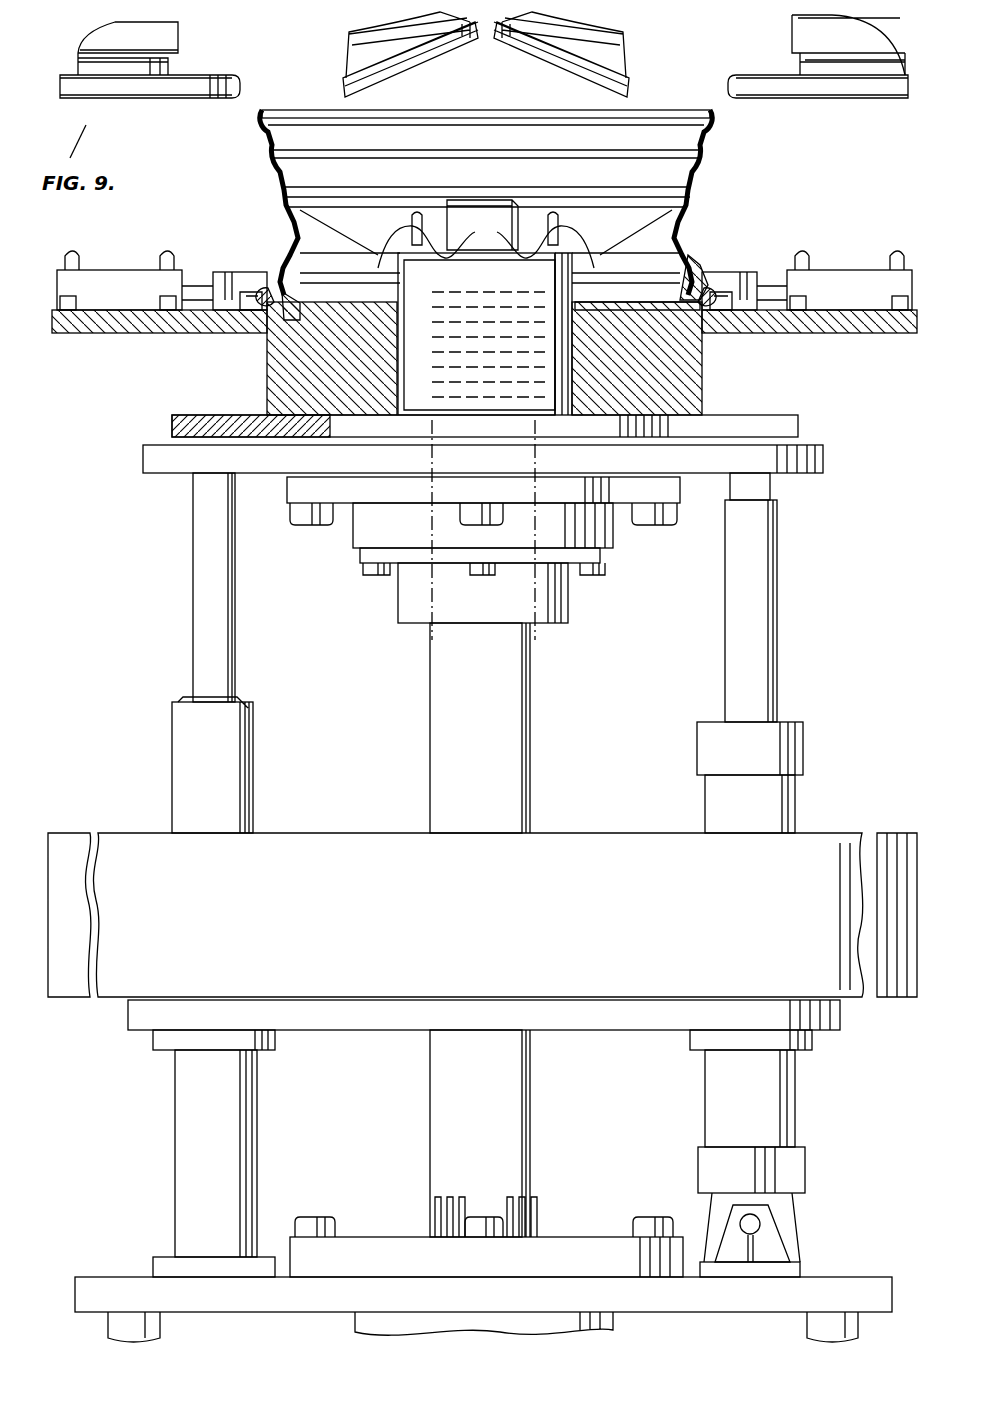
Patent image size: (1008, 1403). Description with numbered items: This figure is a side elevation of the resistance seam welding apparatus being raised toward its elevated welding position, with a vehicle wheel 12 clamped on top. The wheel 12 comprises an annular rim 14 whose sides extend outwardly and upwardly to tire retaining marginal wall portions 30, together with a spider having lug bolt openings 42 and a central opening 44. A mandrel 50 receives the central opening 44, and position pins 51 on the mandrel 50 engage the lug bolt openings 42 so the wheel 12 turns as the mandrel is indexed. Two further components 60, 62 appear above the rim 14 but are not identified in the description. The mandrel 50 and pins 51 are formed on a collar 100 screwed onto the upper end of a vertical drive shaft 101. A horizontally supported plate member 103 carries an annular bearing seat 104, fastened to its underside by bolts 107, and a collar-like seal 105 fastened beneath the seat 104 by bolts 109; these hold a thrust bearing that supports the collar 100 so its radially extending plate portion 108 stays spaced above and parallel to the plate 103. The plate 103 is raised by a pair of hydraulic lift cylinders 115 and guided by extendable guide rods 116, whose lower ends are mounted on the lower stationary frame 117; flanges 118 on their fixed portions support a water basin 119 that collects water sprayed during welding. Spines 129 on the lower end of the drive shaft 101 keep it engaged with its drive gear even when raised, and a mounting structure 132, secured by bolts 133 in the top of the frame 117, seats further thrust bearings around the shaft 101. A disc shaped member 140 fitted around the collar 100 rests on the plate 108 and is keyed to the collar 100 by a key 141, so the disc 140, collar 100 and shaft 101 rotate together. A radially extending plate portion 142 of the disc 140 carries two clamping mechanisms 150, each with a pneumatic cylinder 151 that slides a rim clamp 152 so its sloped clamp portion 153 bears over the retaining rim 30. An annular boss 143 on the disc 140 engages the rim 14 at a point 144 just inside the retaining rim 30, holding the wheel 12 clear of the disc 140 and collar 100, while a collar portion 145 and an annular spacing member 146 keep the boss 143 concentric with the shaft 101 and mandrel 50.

The vehicle wheel 12 is at (712, 155).
The annular rim 14 is at (700, 172).
The tire retaining marginal wall portion 30 is at (258, 115).
The lug bolt openings 42 is at (556, 240).
The central opening 44 is at (446, 232).
The mandrel means 50 is at (495, 200).
The position pins 51 is at (415, 225).
The rim section 60 is at (215, 75).
The rim section 62 is at (348, 85).
The collar member 100 is at (555, 381).
The drive shaft 101 is at (476, 720).
The plate member 103 is at (823, 466).
The annular member 104 is at (368, 530).
The collar-like seal means 105 is at (568, 600).
The bolts 107 is at (640, 520).
The radially extending plate portion 108 is at (798, 428).
The bolts 109 is at (368, 578).
The lift cylinders 115 is at (785, 802).
The guide rods 116 is at (175, 772).
The lower stationary frame 117 is at (840, 1277).
The flanges 118 is at (160, 1045).
The water basin 119 is at (482, 915).
The spines 129 is at (490, 1200).
The mounting structure 132 is at (562, 1240).
The bolts 133 is at (323, 1217).
The disc shaped member 140 is at (702, 386).
The key 141 is at (394, 372).
The radially extending plate portion 142 is at (832, 333).
The annular boss structure 143 is at (278, 302).
The point 144 is at (682, 280).
The collar portion 145 is at (368, 302).
The annular spacing member 146 is at (612, 302).
The clamping mechanisms 150 is at (484, 241).
The pneumatic cylinder 151 is at (96, 278).
The slidable rim clamp 152 is at (484, 266).
The sloped clamp portion 153 is at (250, 292).